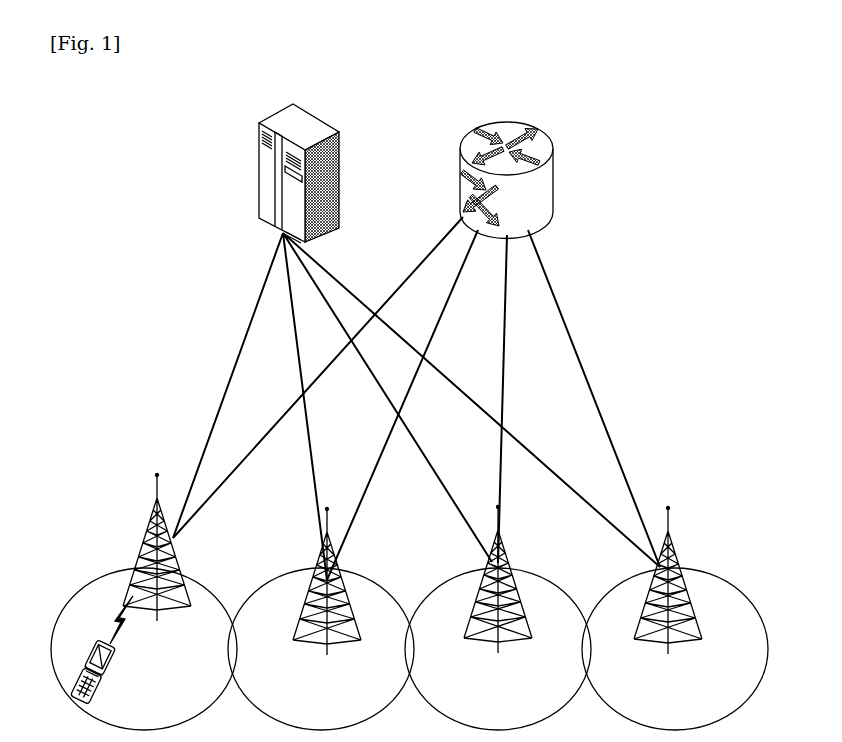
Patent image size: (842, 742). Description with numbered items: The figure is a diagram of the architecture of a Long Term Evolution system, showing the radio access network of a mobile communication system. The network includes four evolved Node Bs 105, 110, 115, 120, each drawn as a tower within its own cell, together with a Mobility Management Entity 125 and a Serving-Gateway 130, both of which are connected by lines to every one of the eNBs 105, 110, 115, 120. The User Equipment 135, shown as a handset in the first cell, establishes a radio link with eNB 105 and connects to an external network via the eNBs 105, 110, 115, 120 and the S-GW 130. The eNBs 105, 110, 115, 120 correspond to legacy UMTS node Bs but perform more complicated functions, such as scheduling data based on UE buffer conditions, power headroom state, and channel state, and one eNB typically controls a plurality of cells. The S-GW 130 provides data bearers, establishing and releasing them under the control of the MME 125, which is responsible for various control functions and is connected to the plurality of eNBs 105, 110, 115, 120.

The evolved Node B 105 is at (142, 525).
The evolved Node B 110 is at (320, 543).
The evolved Node B 115 is at (507, 547).
The evolved Node B 120 is at (677, 547).
The Mobility Management Entity 125 is at (285, 122).
The Serving-Gateway 130 is at (503, 127).
The User Equipment 135 is at (115, 665).